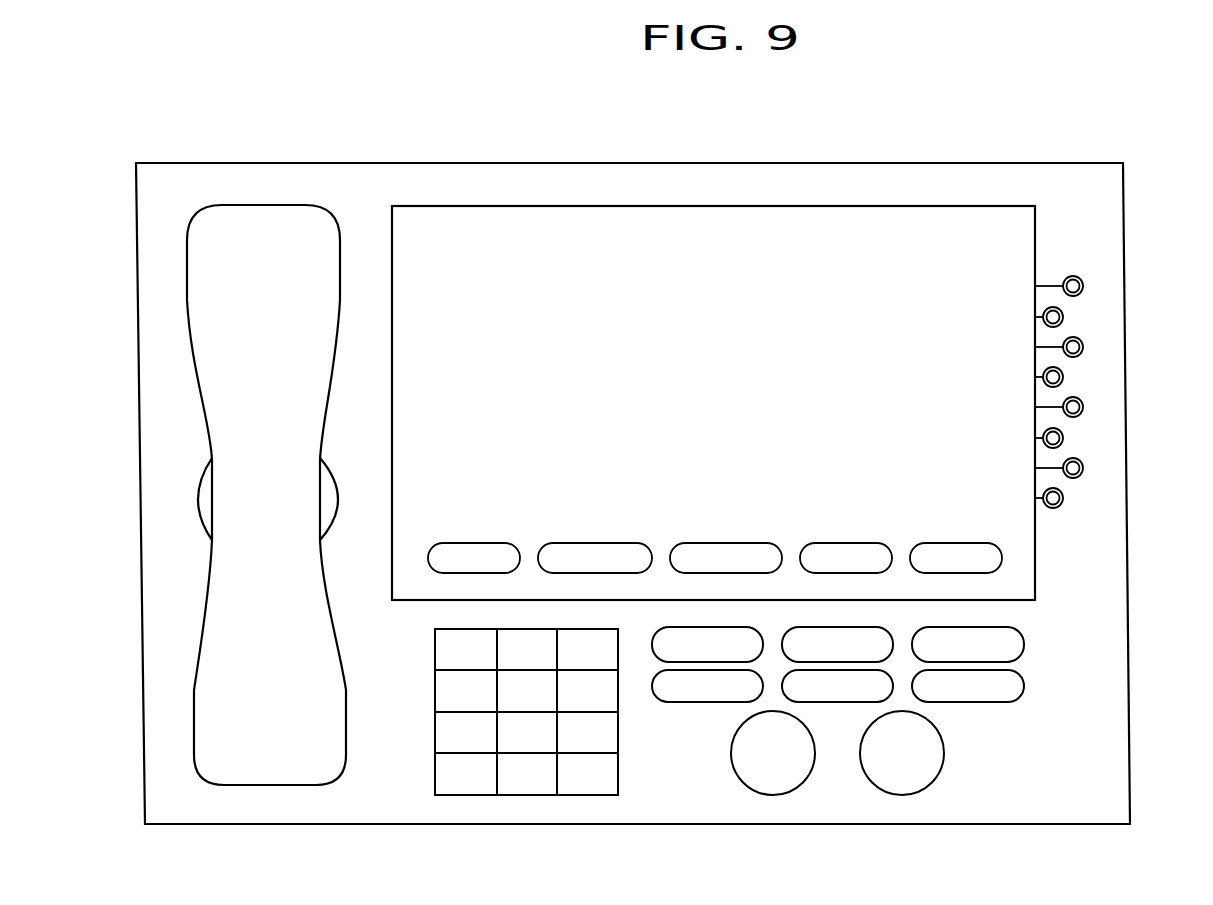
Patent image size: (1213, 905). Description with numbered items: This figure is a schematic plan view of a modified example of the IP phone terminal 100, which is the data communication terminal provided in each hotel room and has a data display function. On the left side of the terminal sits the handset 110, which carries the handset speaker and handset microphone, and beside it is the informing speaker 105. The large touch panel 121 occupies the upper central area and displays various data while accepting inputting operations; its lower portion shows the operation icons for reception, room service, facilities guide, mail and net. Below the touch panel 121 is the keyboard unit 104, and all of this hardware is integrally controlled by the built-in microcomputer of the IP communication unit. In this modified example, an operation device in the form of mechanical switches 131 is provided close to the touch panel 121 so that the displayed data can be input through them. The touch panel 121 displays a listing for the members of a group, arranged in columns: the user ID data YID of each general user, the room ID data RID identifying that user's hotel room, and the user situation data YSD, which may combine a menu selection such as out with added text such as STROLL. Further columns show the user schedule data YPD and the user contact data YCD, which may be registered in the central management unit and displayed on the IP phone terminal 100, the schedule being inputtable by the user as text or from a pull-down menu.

The IP phone terminal 100 is at (1139, 170).
The handset 110 is at (265, 235).
The informing speaker 105 is at (210, 505).
The touch panel 121 is at (713, 356).
The mechanical switches 131 is at (1064, 317).
The keyboard unit 104 is at (1046, 712).
The user ID data YID is at (495, 270).
The room ID data RID is at (590, 282).
The user situation data YSD is at (718, 287).
The user schedule data YPD is at (892, 305).
The user contact data YCD is at (985, 327).